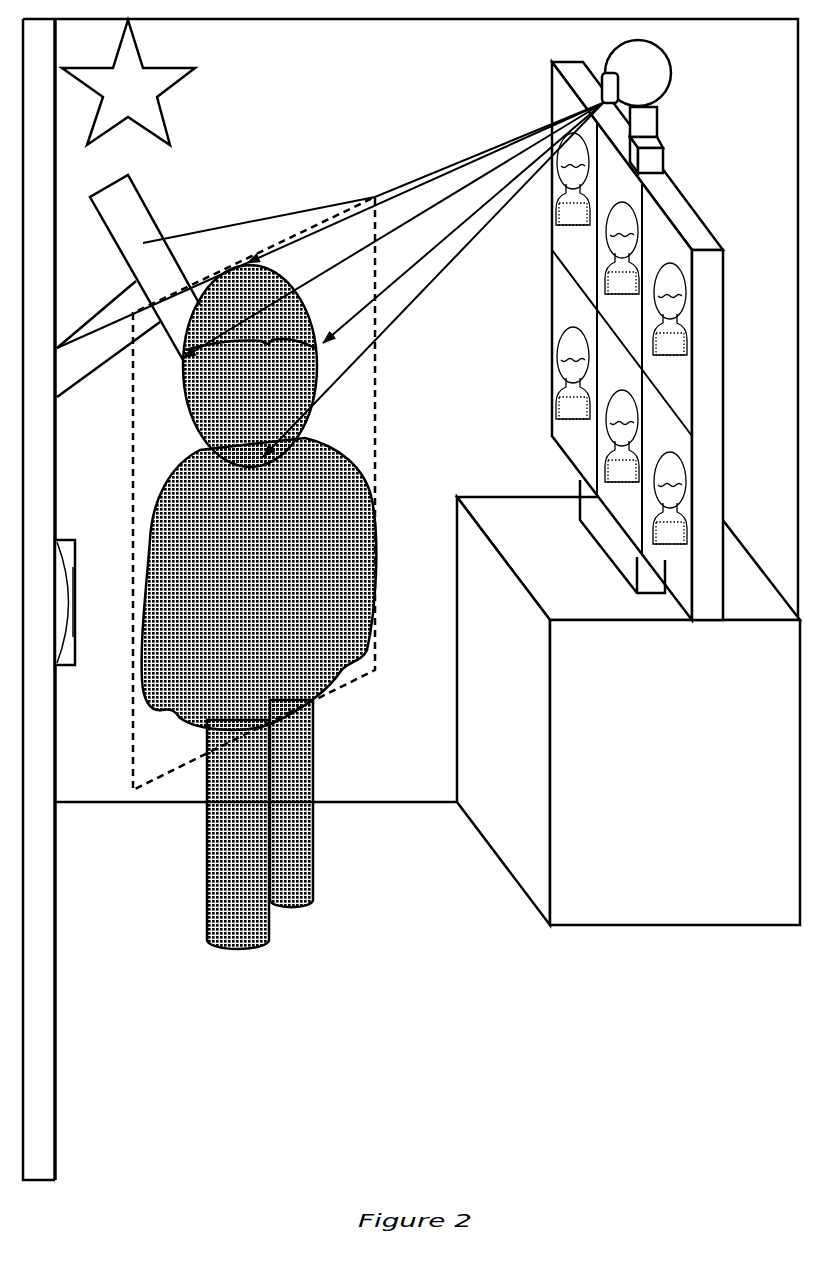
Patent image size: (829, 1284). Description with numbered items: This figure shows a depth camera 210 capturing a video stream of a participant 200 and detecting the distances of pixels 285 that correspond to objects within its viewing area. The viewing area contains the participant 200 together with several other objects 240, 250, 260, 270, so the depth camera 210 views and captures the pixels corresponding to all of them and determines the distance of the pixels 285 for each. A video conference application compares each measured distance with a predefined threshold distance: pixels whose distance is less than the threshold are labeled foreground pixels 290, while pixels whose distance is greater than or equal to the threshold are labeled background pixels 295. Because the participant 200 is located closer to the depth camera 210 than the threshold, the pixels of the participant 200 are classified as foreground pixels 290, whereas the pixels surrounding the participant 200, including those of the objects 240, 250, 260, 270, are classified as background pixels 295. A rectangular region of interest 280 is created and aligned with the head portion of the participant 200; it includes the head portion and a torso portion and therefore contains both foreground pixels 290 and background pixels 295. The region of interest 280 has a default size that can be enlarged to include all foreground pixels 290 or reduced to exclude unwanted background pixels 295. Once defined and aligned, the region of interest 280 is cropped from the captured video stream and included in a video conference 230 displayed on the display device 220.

The participant 200 is at (259, 607).
The depth camera 210 is at (655, 68).
The display device 220 is at (675, 190).
The video conference 230 is at (672, 237).
The object 240 is at (150, 78).
The object 250 is at (122, 190).
The object 260 is at (61, 638).
The object 270 is at (37, 517).
The region of interest 280 is at (378, 670).
The distances of pixels 285 is at (330, 280).
The foreground pixels 290 is at (217, 410).
The background pixels 295 is at (333, 297).